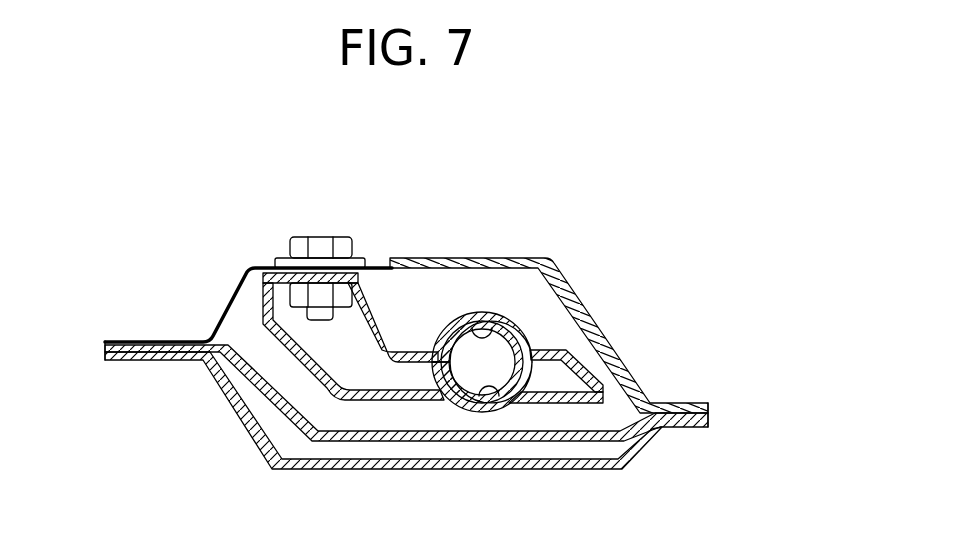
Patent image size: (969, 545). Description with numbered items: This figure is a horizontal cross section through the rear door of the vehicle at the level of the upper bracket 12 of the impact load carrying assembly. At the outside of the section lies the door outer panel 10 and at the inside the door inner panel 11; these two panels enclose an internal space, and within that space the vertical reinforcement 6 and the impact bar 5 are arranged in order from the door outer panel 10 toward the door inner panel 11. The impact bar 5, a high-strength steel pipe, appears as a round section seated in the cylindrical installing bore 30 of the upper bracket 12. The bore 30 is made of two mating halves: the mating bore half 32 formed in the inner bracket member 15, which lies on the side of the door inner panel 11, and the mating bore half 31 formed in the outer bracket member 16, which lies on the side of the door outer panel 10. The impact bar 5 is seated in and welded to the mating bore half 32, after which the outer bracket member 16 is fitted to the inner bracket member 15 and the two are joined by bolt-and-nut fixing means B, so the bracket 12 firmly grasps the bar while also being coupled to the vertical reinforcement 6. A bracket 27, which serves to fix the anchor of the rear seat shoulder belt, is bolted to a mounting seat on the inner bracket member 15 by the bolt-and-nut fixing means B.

The impact bar 5 is at (492, 374).
The vertical reinforcement 6 is at (280, 405).
The door outer panel 10 is at (583, 470).
The door inner panel 11 is at (640, 380).
The upper bracket 12 is at (484, 395).
The inner bracket member 15 is at (558, 349).
The outer bracket member 16 is at (356, 395).
The bracket 27 is at (277, 257).
The cylindrical installing bore 30 is at (511, 364).
The mating bore half 31 is at (491, 400).
The mating bore half 32 is at (483, 327).
The bolt-and-nut fixing means B is at (350, 232).